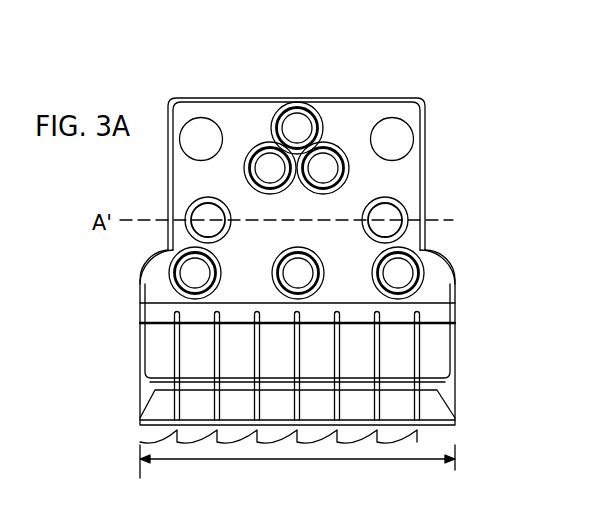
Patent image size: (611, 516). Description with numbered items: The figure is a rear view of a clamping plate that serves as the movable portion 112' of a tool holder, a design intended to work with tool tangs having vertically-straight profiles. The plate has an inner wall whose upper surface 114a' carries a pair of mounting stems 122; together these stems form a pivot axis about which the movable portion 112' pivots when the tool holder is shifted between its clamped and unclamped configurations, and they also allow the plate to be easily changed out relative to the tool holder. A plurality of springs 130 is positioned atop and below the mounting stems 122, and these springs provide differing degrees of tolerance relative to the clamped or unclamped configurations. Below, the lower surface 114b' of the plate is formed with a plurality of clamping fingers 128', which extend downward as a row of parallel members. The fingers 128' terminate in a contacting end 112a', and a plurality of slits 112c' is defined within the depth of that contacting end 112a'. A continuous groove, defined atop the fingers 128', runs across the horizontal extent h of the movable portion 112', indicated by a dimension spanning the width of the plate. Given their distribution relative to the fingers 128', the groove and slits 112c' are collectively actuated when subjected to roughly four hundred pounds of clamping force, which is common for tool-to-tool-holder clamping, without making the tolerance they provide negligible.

The movable portion 112' is at (309, 262).
The upper surface 114a' is at (331, 175).
The lower surface 114b' is at (356, 352).
The contacting end 112a' is at (359, 401).
The slits 112c' is at (236, 366).
The mounting stems 122 is at (186, 196).
The springs 130 is at (320, 147).
The clamping fingers 128' is at (237, 449).
The horizontal extent h is at (413, 460).